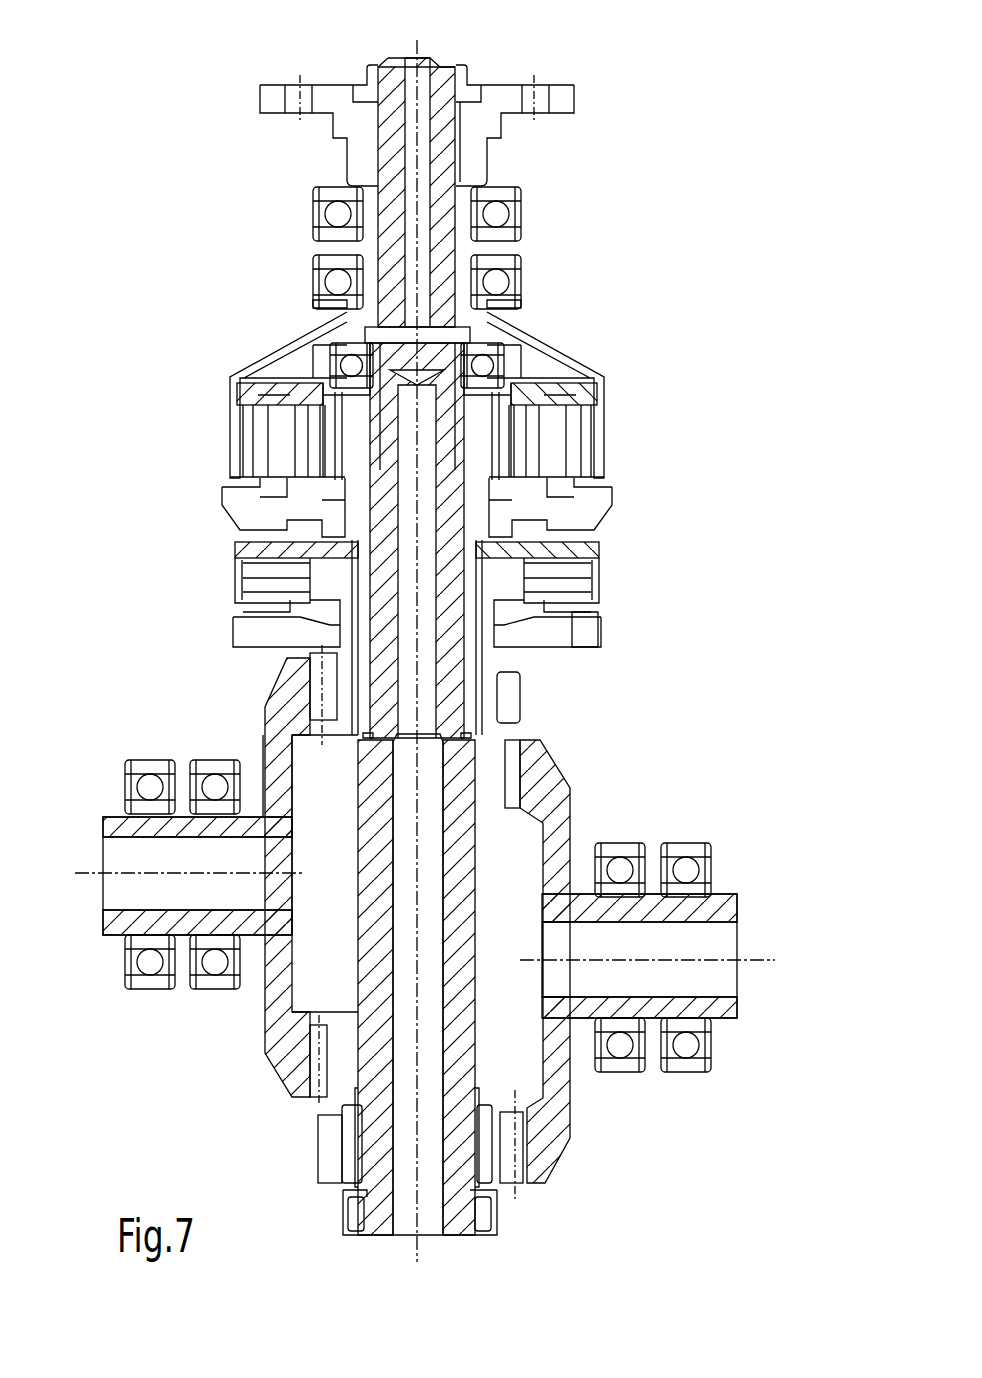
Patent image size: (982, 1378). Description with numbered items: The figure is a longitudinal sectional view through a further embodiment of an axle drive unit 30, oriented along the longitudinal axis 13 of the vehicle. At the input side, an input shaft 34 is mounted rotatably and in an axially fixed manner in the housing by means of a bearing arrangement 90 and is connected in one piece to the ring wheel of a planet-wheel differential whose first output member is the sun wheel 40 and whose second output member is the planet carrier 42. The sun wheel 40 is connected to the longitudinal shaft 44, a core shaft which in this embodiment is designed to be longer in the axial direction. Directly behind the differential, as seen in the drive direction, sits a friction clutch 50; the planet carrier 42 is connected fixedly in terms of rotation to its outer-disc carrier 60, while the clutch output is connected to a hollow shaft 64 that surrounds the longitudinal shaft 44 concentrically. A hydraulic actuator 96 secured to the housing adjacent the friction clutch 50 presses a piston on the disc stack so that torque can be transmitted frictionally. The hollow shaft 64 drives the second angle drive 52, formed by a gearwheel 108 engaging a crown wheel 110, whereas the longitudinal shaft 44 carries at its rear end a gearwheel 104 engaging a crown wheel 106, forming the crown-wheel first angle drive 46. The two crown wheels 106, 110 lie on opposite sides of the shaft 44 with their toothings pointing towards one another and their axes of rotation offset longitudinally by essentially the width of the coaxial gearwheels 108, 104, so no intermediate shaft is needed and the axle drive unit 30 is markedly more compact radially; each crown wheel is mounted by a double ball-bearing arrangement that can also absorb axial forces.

The longitudinal axis 13 is at (420, 1082).
The axle drive unit 30 is at (747, 152).
The input shaft 34 is at (432, 72).
The sun wheel 40 is at (348, 443).
The planet carrier 42 is at (537, 440).
The longitudinal shaft 44 is at (372, 997).
The first angle drive 46 is at (530, 1200).
The friction clutch 50 is at (238, 573).
The second angle drive 52 is at (250, 707).
The outer-disc carrier 60 is at (598, 547).
The hollow shaft 64 is at (488, 657).
The bearing arrangement 90 is at (543, 224).
The hydraulic actuator 96 is at (598, 620).
The gearwheel 104 is at (488, 1150).
The crown wheel 106 is at (555, 1123).
The gearwheel 108 is at (507, 703).
The crown wheel 110 is at (277, 757).